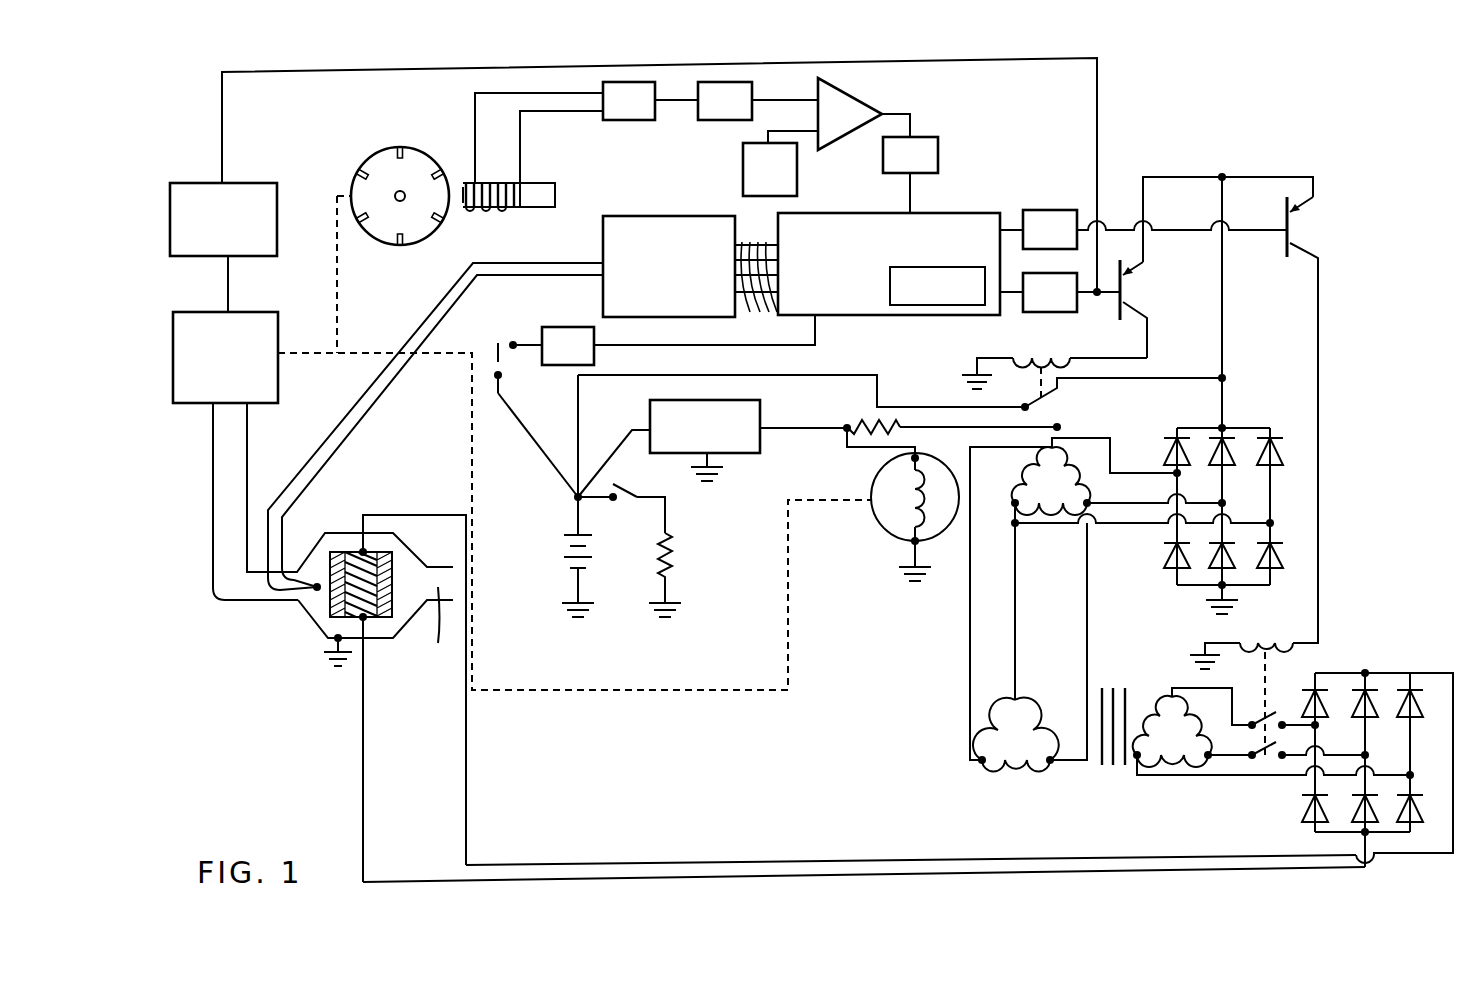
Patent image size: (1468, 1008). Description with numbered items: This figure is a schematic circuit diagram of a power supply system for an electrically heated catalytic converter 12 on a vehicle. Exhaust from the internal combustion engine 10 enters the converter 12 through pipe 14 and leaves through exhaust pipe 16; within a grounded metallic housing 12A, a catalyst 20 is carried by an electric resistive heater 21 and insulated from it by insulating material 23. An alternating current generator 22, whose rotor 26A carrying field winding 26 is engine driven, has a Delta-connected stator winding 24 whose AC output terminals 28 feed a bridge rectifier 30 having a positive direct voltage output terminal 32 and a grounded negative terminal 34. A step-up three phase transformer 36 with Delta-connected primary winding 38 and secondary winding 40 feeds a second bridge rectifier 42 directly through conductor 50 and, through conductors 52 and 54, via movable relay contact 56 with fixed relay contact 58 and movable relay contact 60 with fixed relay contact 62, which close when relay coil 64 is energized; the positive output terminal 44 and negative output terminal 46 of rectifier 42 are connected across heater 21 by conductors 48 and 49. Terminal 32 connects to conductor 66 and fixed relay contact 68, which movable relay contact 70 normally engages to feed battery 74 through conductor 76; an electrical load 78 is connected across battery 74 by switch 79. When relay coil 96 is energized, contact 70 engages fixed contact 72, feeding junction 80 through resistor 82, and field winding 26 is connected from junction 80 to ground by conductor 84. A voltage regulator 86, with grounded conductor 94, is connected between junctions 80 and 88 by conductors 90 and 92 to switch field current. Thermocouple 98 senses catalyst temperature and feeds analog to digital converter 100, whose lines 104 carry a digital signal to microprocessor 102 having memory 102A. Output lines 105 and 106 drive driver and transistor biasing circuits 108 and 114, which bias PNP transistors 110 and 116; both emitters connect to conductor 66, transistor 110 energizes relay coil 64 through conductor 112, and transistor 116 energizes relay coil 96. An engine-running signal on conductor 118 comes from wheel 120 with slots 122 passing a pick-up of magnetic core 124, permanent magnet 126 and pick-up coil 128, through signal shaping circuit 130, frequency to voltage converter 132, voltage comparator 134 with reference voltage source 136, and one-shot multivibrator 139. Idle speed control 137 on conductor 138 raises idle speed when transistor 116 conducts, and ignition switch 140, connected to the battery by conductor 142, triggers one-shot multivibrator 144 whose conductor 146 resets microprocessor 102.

The internal combustion engine 10 is at (278, 325).
The electrically heated catalytic converter 12 is at (318, 633).
The converter housing 12A is at (330, 642).
The pipe 14 is at (243, 602).
The exhaust pipe 16 is at (439, 631).
The catalyst 20 is at (390, 578).
The electric resistive heater 21 is at (360, 572).
The alternating current generator 22 is at (958, 535).
The insulating material 23 is at (380, 615).
The stator winding 24 is at (1065, 465).
The field winding 26 is at (883, 527).
The rotor 26A is at (898, 553).
The AC output terminals 28 is at (1095, 503).
The three phase full wave bridge rectifier 30 is at (1245, 428).
The positive direct voltage output terminal 32 is at (1222, 428).
The negative direct voltage output terminal 34 is at (1220, 587).
The three phase transformer 36 is at (1130, 690).
The primary winding 38 is at (1020, 768).
The secondary winding 40 is at (1178, 745).
The bridge rectifier 42 is at (1412, 678).
The positive direct voltage output terminal 44 is at (1363, 673).
The negative direct voltage output terminal 46 is at (1363, 832).
The conductor 48 is at (847, 860).
The conductor 49 is at (757, 877).
The conductor 50 is at (1232, 778).
The conductor 52 is at (1220, 757).
The conductor 54 is at (1200, 688).
The movable relay contact 56 is at (1252, 757).
The fixed relay contact 58 is at (1283, 757).
The movable relay contact 60 is at (1265, 718).
The fixed relay contact 62 is at (1280, 722).
The relay coil 64 is at (1258, 640).
The conductor 66 is at (1228, 398).
The fixed relay contact 68 is at (1058, 388).
The movable relay contact 70 is at (1032, 402).
The fixed relay contact 72 is at (1060, 426).
The battery 74 is at (565, 555).
The conductor 76 is at (790, 375).
The electrical load 78 is at (682, 555).
The switch 79 is at (627, 503).
The junction 80 is at (845, 432).
The resistor 82 is at (862, 422).
The conductor 84 is at (842, 447).
The voltage regulator 86 is at (744, 450).
The junction 88 is at (578, 497).
The conductor 90 is at (622, 443).
The conductor 92 is at (780, 427).
The grounded conductor 94 is at (707, 460).
The relay coil 96 is at (1025, 352).
The thermocouple 98 is at (317, 593).
The analog to digital converter 100 is at (648, 222).
The microprocessor 102 is at (930, 213).
The memory 102A is at (955, 306).
The lines 104 is at (756, 291).
The output line 105 is at (1010, 228).
The output line 106 is at (1023, 305).
The driver and transistor biasing circuit 108 is at (1048, 210).
The PNP transistor 110 is at (1297, 218).
The conductor 112 is at (1320, 382).
The driver and transistor biasing circuit 114 is at (1083, 308).
The PNP transistor 116 is at (1127, 298).
The conductor 118 is at (910, 190).
The wheel 120 is at (422, 235).
The slots 122 is at (354, 168).
The magnetic core 124 is at (470, 207).
The permanent magnet 126 is at (540, 183).
The pick-up coil 128 is at (503, 210).
The signal shaping circuit 130 is at (603, 94).
The frequency to voltage converter 132 is at (730, 120).
The voltage comparator 134 is at (848, 102).
The reference voltage source 136 is at (743, 178).
The engine idle speed control 137 is at (277, 205).
The conductor 138 is at (1050, 62).
The one-shot multivibrator 139 is at (938, 157).
The ignition switch 140 is at (497, 355).
The conductor 142 is at (542, 455).
The one-shot multivibrator 144 is at (588, 327).
The conductor 146 is at (815, 320).